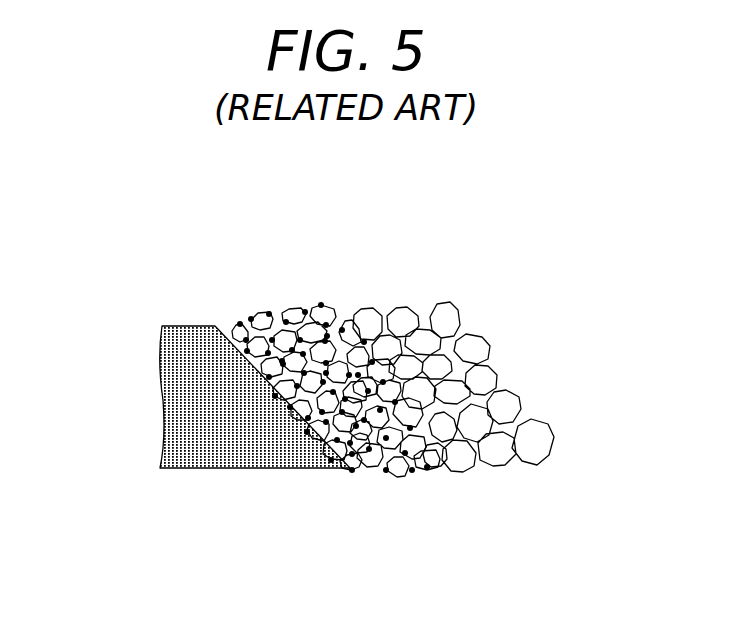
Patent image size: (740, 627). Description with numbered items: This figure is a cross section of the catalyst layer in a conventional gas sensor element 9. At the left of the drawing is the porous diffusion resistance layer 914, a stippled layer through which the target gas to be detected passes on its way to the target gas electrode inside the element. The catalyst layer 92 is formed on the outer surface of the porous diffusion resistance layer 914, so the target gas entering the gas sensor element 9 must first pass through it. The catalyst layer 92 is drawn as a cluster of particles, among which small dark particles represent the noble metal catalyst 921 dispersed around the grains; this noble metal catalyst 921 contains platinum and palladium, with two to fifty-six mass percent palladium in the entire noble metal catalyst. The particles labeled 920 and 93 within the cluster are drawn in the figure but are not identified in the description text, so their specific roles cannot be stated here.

The gas sensor element 9 is at (430, 369).
The catalyst layer 92 is at (336, 369).
The active material particle 920 is at (342, 330).
The noble metal catalyst 921 is at (328, 437).
The active material particles 93 is at (510, 403).
The porous diffusion resistance layer 914 is at (210, 433).